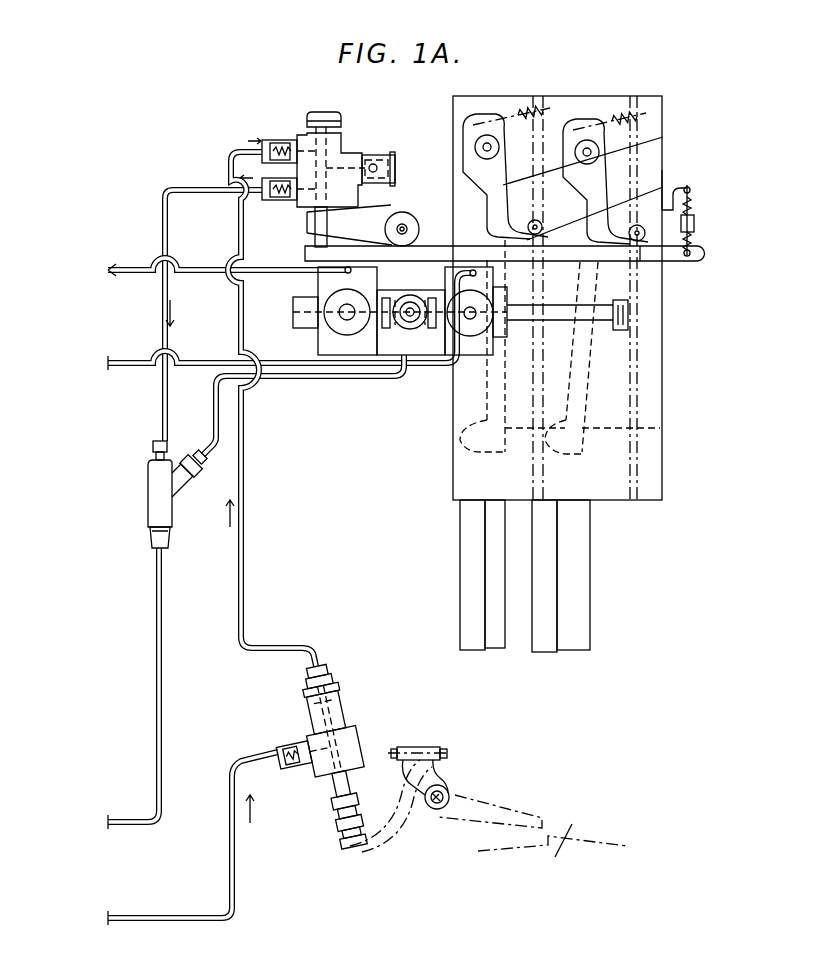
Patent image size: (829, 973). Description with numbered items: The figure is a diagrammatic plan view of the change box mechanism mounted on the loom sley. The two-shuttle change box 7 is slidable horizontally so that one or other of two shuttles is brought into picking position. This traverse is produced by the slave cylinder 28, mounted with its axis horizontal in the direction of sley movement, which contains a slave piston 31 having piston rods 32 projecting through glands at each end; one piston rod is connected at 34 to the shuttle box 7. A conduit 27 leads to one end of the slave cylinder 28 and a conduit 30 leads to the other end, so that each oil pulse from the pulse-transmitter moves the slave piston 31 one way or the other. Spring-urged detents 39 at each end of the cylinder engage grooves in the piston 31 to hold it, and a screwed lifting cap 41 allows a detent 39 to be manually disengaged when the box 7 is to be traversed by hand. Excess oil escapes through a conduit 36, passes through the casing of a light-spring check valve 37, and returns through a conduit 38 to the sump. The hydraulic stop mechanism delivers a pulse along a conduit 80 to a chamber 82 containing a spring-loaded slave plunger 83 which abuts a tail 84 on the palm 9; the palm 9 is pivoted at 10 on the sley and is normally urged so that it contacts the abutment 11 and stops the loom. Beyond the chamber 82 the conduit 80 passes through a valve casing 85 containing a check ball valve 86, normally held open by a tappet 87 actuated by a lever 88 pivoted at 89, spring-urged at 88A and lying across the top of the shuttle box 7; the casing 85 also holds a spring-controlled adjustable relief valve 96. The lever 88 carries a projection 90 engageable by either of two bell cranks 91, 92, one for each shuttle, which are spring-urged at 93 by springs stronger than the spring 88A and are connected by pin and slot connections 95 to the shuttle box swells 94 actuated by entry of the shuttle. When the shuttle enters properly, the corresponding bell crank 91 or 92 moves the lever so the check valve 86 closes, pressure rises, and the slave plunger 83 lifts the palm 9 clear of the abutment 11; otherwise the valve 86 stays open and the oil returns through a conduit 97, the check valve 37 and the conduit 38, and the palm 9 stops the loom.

The two-shuttle change box 7 is at (652, 370).
The palm 9 is at (465, 806).
The pivot 10 is at (444, 784).
The abutment 11 is at (552, 831).
The conduit 27 is at (148, 268).
The slave cylinder 28 is at (367, 347).
The conduit 30 is at (135, 364).
The slave piston 31 is at (408, 330).
The piston rods 32 is at (296, 313).
The connection 34 is at (629, 315).
The conduit 36 is at (328, 380).
The light-spring check valve 37 is at (177, 489).
The conduit 38 is at (161, 740).
The spring-urged detents 39 is at (342, 310).
The screwed lifting cap 41 is at (345, 326).
The conduit 80 is at (230, 163).
The chamber 82 is at (349, 730).
The slave plunger 83 is at (337, 700).
The tail 84 is at (386, 832).
The valve casing 85 is at (312, 141).
The check ball valve 86 is at (340, 143).
The tappet 87 is at (315, 238).
The lever 88 is at (636, 258).
The spring 88A is at (628, 250).
The pivot 89 is at (403, 223).
The projection 90 is at (670, 181).
The bell crank 91 is at (596, 154).
The bell crank 92 is at (608, 192).
The springs 93 is at (612, 113).
The shuttle box swells 94 is at (640, 432).
The pin and slot connections 95 is at (585, 150).
The adjustable relief valve 96 is at (346, 175).
The conduit 97 is at (163, 222).